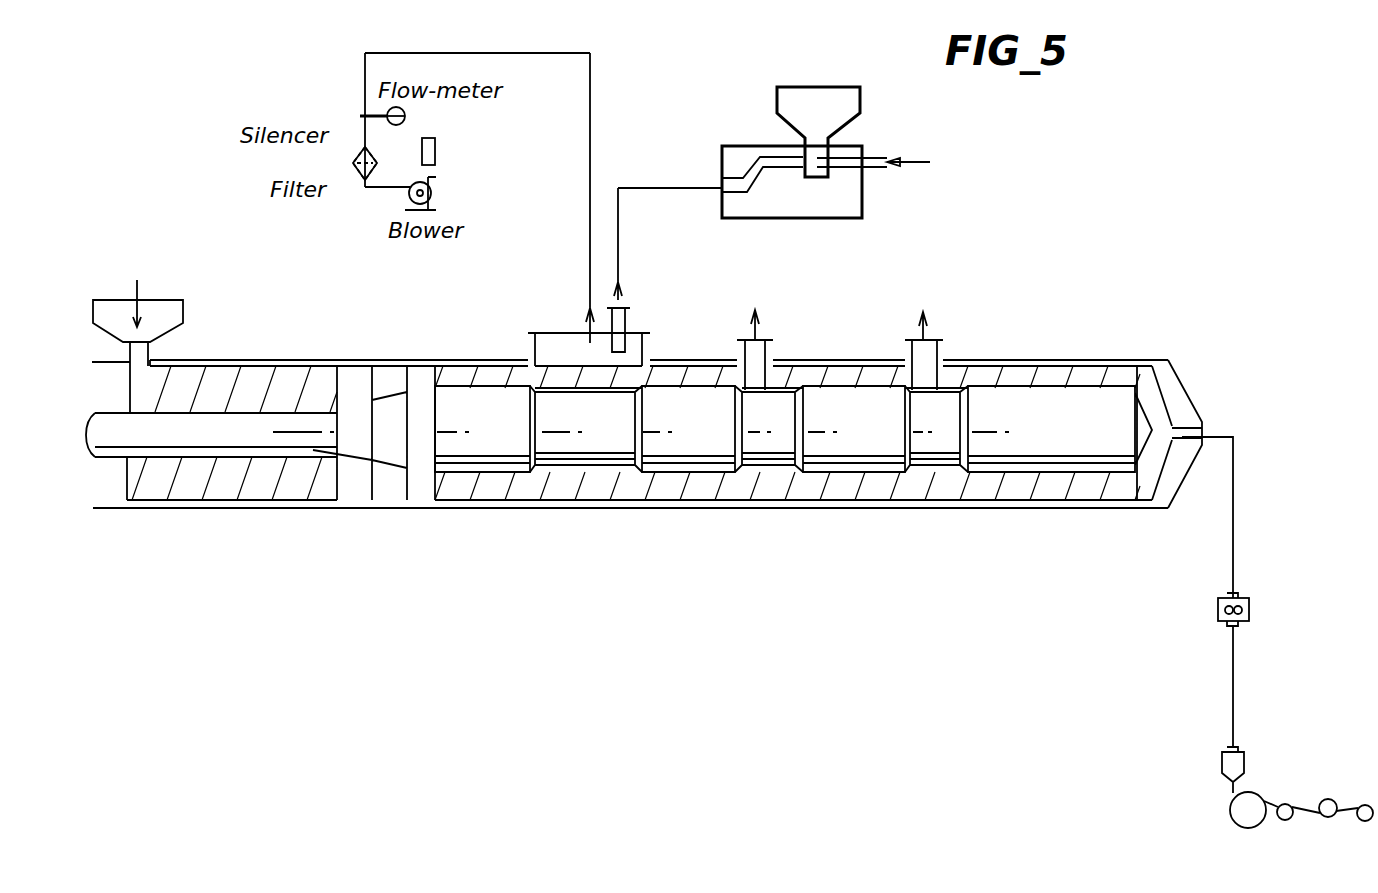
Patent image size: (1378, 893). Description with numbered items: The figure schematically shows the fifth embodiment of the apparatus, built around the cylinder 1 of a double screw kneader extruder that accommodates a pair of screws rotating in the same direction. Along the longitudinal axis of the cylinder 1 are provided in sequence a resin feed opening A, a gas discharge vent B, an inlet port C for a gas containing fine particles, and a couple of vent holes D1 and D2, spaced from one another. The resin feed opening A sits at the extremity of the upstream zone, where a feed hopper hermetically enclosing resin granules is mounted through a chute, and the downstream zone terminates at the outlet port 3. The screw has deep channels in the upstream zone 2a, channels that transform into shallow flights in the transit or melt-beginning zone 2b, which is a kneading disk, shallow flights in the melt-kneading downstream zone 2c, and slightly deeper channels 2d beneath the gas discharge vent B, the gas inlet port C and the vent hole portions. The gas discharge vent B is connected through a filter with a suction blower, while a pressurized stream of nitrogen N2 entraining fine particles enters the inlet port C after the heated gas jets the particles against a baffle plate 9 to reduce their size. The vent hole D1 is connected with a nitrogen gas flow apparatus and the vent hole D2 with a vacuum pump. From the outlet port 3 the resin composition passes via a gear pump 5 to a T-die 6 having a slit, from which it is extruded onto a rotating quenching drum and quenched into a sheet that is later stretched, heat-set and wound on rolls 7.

The cylinder 1 is at (244, 362).
The upstream zone 2a is at (270, 420).
The transit zone 2b is at (388, 405).
The downstream zone 2c is at (452, 405).
The slightly deep-channels 2d is at (778, 405).
The outlet port 3 is at (1207, 504).
The gear pump 5 is at (1217, 612).
The T-die 6 is at (1218, 770).
The take-up rolls 7 is at (1365, 802).
The baffle plate 9 is at (748, 170).
The resin feed opening A is at (138, 346).
The gas discharge vent B is at (507, 209).
The inlet port C is at (664, 270).
The vent hole D1 is at (762, 346).
The vent hole D2 is at (931, 346).
The nitrogen supply N2 is at (891, 164).